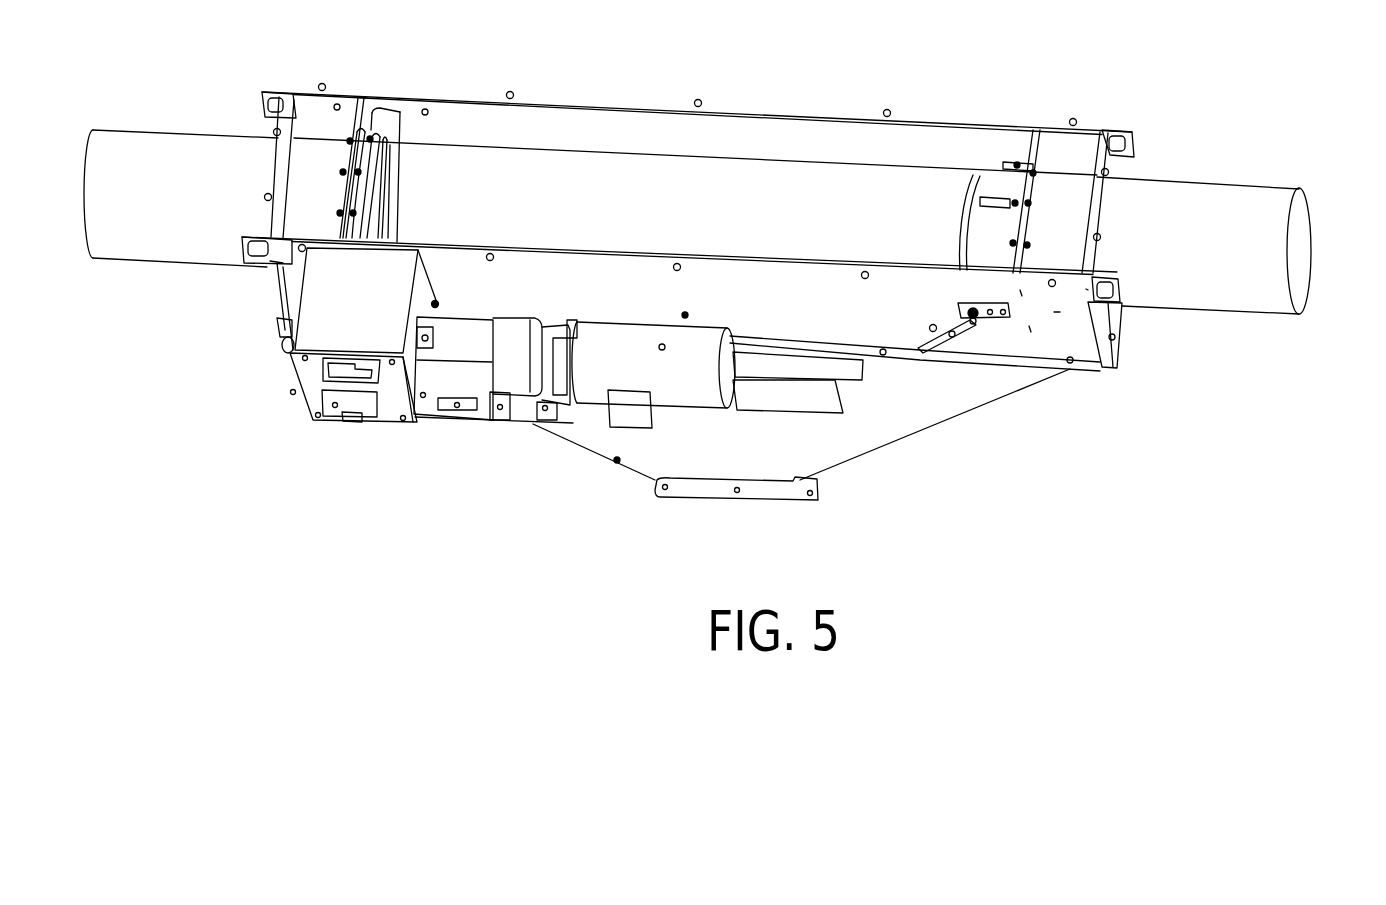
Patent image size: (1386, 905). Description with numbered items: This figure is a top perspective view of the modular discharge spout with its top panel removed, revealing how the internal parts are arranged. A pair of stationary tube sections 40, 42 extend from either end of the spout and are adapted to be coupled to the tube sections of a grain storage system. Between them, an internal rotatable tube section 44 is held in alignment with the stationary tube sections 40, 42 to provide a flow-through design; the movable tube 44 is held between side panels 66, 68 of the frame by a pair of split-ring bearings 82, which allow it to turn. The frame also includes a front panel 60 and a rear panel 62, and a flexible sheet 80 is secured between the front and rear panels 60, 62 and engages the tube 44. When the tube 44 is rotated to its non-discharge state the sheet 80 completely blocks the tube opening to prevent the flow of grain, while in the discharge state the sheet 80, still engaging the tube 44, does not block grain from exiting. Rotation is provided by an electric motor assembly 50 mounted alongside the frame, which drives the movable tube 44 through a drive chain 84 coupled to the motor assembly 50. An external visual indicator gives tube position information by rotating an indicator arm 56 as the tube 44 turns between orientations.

The stationary tube section 40 is at (106, 138).
The stationary tube section 42 is at (1302, 260).
The flexible sheet 80 is at (858, 172).
The drive chain 84 is at (378, 157).
The side panel 66 is at (360, 103).
The split-ring bearings 82 is at (373, 125).
The rotatable tube section 44 is at (977, 177).
The side panel 68 is at (1037, 157).
The rear panel 62 is at (1082, 137).
The front panel 60 is at (1087, 350).
The indicator arm 56 is at (963, 333).
The electric motor assembly 50 is at (670, 403).